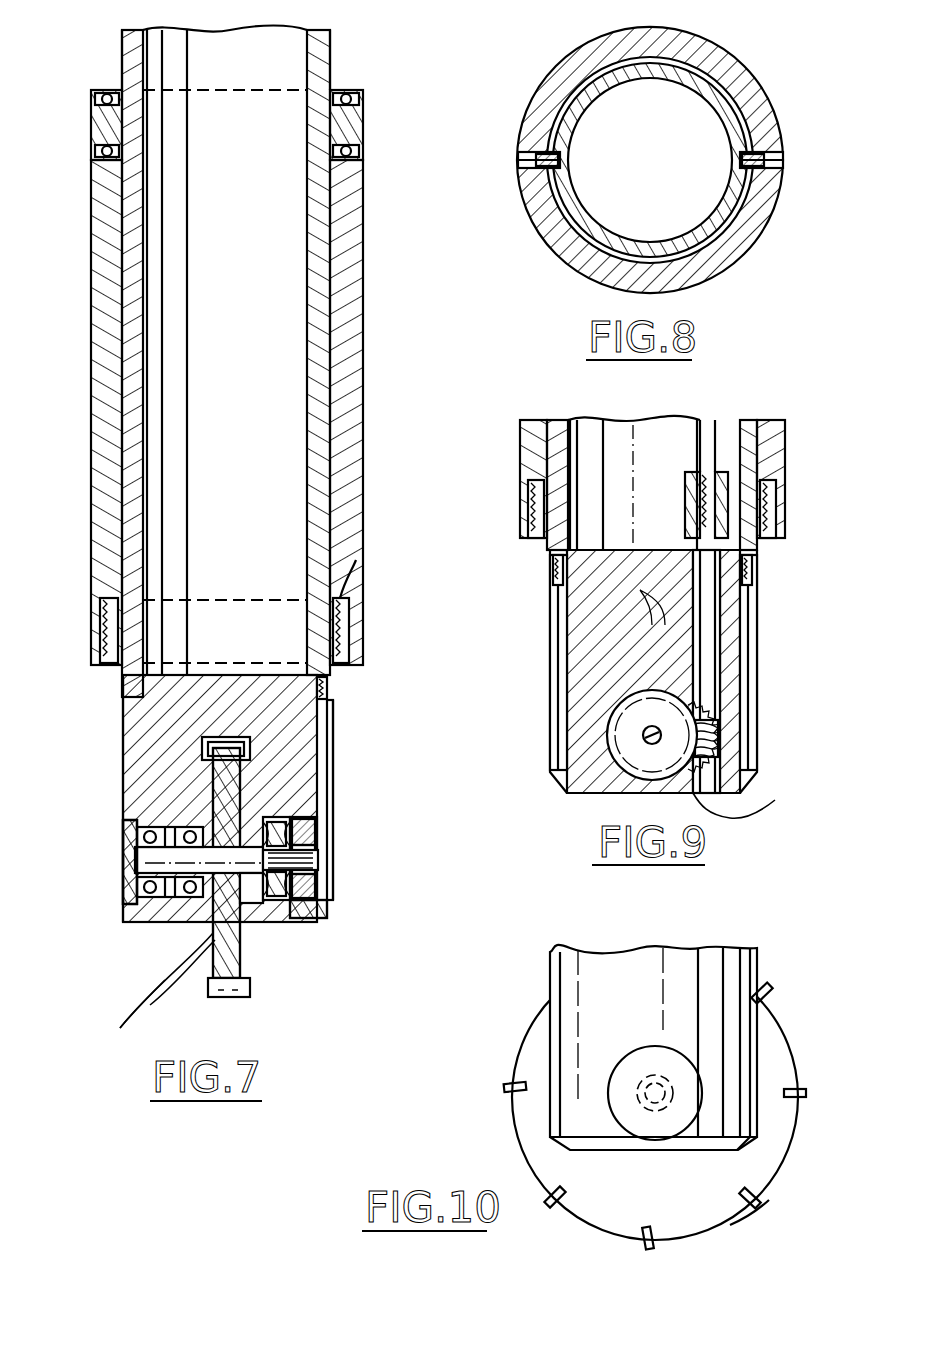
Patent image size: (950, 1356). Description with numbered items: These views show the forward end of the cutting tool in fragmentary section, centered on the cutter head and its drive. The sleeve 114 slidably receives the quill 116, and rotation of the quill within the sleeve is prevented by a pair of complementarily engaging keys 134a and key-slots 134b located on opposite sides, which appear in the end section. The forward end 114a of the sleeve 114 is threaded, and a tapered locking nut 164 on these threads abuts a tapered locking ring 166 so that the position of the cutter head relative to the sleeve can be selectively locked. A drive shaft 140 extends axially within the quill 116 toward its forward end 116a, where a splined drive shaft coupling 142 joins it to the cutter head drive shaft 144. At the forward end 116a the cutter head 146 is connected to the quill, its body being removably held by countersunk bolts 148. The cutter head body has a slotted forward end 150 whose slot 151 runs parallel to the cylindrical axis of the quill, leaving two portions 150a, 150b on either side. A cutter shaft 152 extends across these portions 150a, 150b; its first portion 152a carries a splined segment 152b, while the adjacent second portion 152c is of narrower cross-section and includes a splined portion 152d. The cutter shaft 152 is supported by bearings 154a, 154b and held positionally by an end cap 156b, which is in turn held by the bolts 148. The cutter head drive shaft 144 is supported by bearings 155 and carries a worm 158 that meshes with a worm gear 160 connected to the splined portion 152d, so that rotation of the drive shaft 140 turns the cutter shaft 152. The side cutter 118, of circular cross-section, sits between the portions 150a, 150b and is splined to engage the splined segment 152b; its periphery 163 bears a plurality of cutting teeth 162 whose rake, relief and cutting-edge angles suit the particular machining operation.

In FIG. 7, the sleeve 114 is at (91, 300).
In FIG. 8, the sleeve 114 is at (575, 70).
In FIG. 7, the forward end of the sleeve 114a is at (355, 662).
In FIG. 9, the forward end of the sleeve 114a is at (780, 538).
In FIG. 7, the quill 116 is at (318, 378).
In FIG. 8, the quill 116 is at (735, 90).
In FIG. 9, the quill 116 is at (760, 488).
In FIG. 7, the forward end of the quill 116a is at (328, 692).
In FIG. 7, the side cutter 118 is at (242, 965).
In FIG. 10, the side cutter 118 is at (513, 1112).
In FIG. 7, the keys 134a is at (105, 90).
In FIG. 8, the keys 134a is at (750, 150).
In FIG. 7, the key-slots 134b is at (122, 50).
In FIG. 8, the key-slots 134b is at (740, 170).
In FIG. 9, the drive shaft 140 is at (715, 428).
In FIG. 9, the splined drive shaft coupling 142 is at (786, 438).
In FIG. 9, the cutter head drive shaft 144 is at (758, 698).
In FIG. 7, the cutter head 146 is at (118, 877).
In FIG. 9, the cutter head 146 is at (763, 755).
In FIG. 7, the countersunk bolts 148 is at (335, 800).
In FIG. 9, the countersunk bolts 148 is at (550, 665).
In FIG. 7, the slotted forward end 150 is at (182, 935).
In FIG. 7, the first portion of the forward end 150a is at (320, 780).
In FIG. 10, the first portion of the forward end 150a is at (550, 962).
In FIG. 7, the second portion of the forward end 150b is at (123, 762).
In FIG. 7, the slot 151 is at (130, 1020).
In FIG. 7, the cutter shaft 152 is at (162, 980).
In FIG. 7, the first portion of the cutter shaft 152a is at (135, 858).
In FIG. 7, the splined segment 152b is at (250, 903).
In FIG. 7, the second portion of the cutter shaft 152c is at (318, 860).
In FIG. 9, the second portion of the cutter shaft 152c is at (643, 735).
In FIG. 7, the splined portion 152d is at (334, 840).
In FIG. 7, the bearing 154a is at (308, 870).
In FIG. 7, the bearing 154b is at (190, 828).
In FIG. 9, the bearings 155 is at (742, 605).
In FIG. 7, the end cap 156b is at (130, 845).
In FIG. 9, the worm 158 is at (730, 735).
In FIG. 7, the worm gear 160 is at (300, 905).
In FIG. 9, the worm gear 160 is at (612, 718).
In FIG. 7, the cutting teeth 162 is at (215, 992).
In FIG. 10, the cutting teeth 162 is at (510, 1085).
In FIG. 10, the periphery 163 is at (785, 1162).
In FIG. 7, the set screw 164 is at (345, 610).
In FIG. 9, the set screw 164 is at (776, 520).
In FIG. 7, the tapered locking ring 166 is at (342, 595).